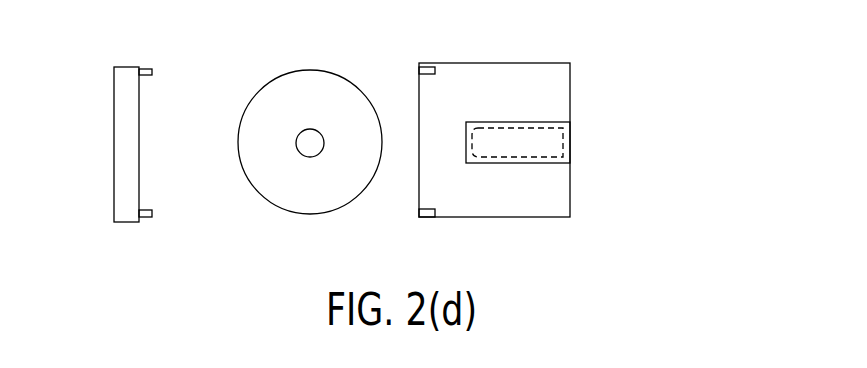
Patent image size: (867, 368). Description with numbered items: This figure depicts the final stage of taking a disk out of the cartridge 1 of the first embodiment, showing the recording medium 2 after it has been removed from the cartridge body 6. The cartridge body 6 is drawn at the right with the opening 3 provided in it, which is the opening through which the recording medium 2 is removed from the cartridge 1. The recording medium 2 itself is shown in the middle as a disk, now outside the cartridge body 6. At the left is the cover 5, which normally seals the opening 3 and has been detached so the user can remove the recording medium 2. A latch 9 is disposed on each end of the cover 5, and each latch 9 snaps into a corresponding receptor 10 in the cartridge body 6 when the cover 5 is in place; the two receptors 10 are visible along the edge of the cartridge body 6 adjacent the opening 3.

The cartridge 1 is at (506, 148).
The recording medium 2 is at (283, 190).
The opening 3 is at (419, 200).
The cover 5 is at (123, 78).
The cartridge body 6 is at (588, 192).
The latch 9 is at (144, 70).
The receptor 10 is at (420, 70).